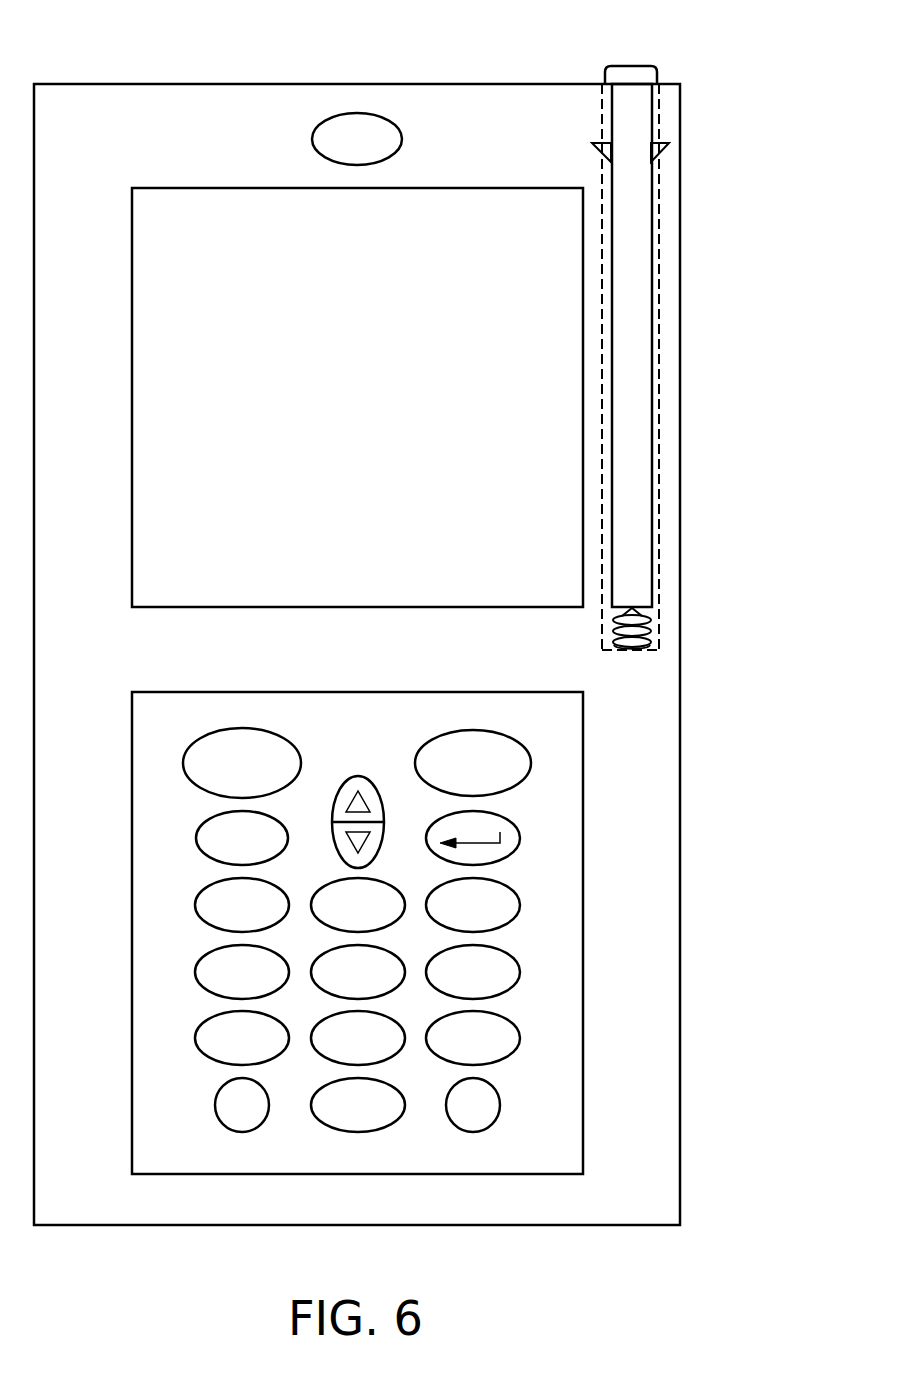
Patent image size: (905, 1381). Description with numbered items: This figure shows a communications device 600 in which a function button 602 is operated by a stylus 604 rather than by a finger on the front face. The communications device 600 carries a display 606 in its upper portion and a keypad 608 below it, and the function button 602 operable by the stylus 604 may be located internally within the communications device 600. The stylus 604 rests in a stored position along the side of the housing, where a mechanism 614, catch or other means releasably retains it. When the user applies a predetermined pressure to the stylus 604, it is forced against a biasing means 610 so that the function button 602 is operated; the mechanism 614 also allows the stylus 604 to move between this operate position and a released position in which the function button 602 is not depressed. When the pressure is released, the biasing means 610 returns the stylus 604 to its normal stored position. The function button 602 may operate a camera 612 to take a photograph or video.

The communications device 600 is at (155, 84).
The function button 602 is at (657, 650).
The stylus 604 is at (631, 66).
The display 606 is at (132, 390).
The keypad 608 is at (132, 840).
The biasing means 610 is at (611, 624).
The camera 612 is at (402, 139).
The mechanism 614 is at (669, 150).